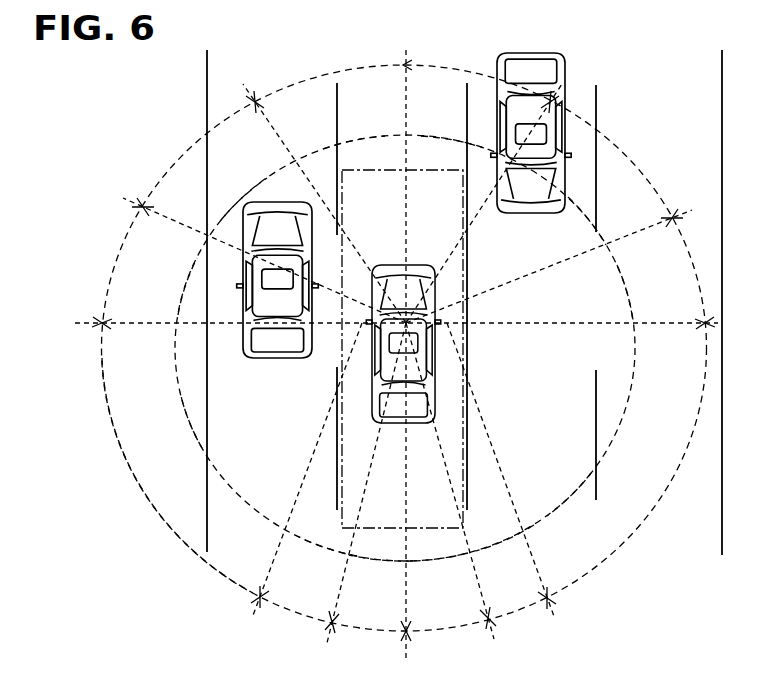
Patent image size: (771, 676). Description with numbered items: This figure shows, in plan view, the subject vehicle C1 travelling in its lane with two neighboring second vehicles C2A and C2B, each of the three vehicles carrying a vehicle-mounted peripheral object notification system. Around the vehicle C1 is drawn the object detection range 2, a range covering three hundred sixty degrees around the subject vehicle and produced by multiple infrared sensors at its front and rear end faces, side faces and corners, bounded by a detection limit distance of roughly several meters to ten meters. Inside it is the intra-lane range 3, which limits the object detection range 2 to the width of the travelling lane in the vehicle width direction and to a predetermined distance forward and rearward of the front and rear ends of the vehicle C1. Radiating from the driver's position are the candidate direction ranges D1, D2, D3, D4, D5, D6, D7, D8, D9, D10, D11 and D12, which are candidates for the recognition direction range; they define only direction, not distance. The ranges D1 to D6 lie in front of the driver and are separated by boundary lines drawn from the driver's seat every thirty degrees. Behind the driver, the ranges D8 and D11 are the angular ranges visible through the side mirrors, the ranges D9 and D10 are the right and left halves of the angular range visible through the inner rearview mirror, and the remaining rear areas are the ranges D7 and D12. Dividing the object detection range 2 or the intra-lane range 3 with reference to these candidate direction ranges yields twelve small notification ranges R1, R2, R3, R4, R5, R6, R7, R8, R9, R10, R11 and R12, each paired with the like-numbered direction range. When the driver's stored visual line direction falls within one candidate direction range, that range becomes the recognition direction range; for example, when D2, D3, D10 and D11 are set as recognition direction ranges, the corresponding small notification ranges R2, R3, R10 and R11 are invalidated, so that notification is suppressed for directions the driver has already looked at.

The vehicle C1 is at (421, 262).
The vehicle C2A is at (282, 364).
The vehicle C2B is at (572, 56).
The object detection range 2 is at (188, 254).
The intra-lane range 3 is at (417, 170).
The candidate direction range D1 is at (700, 294).
The candidate direction range D2 is at (549, 231).
The candidate direction range D3 is at (484, 194).
The candidate direction range D4 is at (324, 196).
The candidate direction range D5 is at (264, 231).
The candidate direction range D6 is at (106, 296).
The candidate direction range D7 is at (177, 475).
The candidate direction range D8 is at (306, 479).
The candidate direction range D9 is at (365, 484).
The candidate direction range D10 is at (433, 632).
The candidate direction range D11 is at (474, 481).
The candidate direction range D12 is at (569, 471).
The small notification range R1 is at (630, 296).
The small notification range R2 is at (598, 227).
The small notification range R3 is at (452, 140).
The small notification range R4 is at (360, 138).
The small notification range R5 is at (247, 188).
The small notification range R6 is at (183, 287).
The small notification range R7 is at (190, 430).
The small notification range R8 is at (318, 552).
The small notification range R9 is at (374, 563).
The small notification range R10 is at (447, 562).
The small notification range R11 is at (503, 547).
The small notification range R12 is at (545, 530).